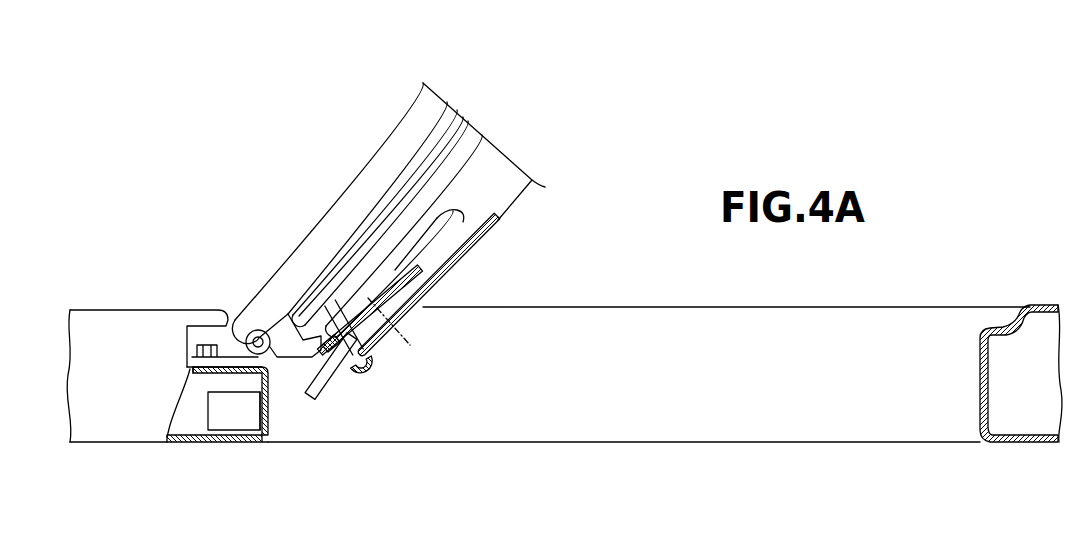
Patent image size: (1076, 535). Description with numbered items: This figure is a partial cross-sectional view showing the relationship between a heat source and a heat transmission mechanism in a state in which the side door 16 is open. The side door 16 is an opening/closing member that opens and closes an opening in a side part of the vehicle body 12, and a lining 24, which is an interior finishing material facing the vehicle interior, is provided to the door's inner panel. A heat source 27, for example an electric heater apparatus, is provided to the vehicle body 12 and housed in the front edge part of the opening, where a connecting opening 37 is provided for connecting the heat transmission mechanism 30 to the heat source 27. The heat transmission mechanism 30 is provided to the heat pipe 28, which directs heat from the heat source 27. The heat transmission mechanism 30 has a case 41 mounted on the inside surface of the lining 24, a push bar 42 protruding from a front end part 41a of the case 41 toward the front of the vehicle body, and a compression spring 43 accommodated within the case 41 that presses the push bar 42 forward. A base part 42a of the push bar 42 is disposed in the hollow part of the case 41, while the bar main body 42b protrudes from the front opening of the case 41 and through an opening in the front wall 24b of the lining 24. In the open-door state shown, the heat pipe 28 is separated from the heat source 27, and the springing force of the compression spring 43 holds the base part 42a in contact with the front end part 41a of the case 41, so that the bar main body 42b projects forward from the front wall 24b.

The vehicle body 12 is at (118, 308).
The side door 16 is at (412, 119).
The lining 24 is at (467, 243).
The front wall 24b is at (352, 364).
The heat source 27 is at (228, 423).
The heat pipe 28 is at (497, 218).
The heat transmission mechanism 30 is at (408, 321).
The connecting opening 37 is at (268, 414).
The case 41 is at (390, 329).
The front end part 41a is at (293, 295).
The push bar 42 is at (518, 358).
The base part 42a is at (372, 360).
The bar main body 42b is at (325, 393).
The compression spring 43 is at (358, 296).